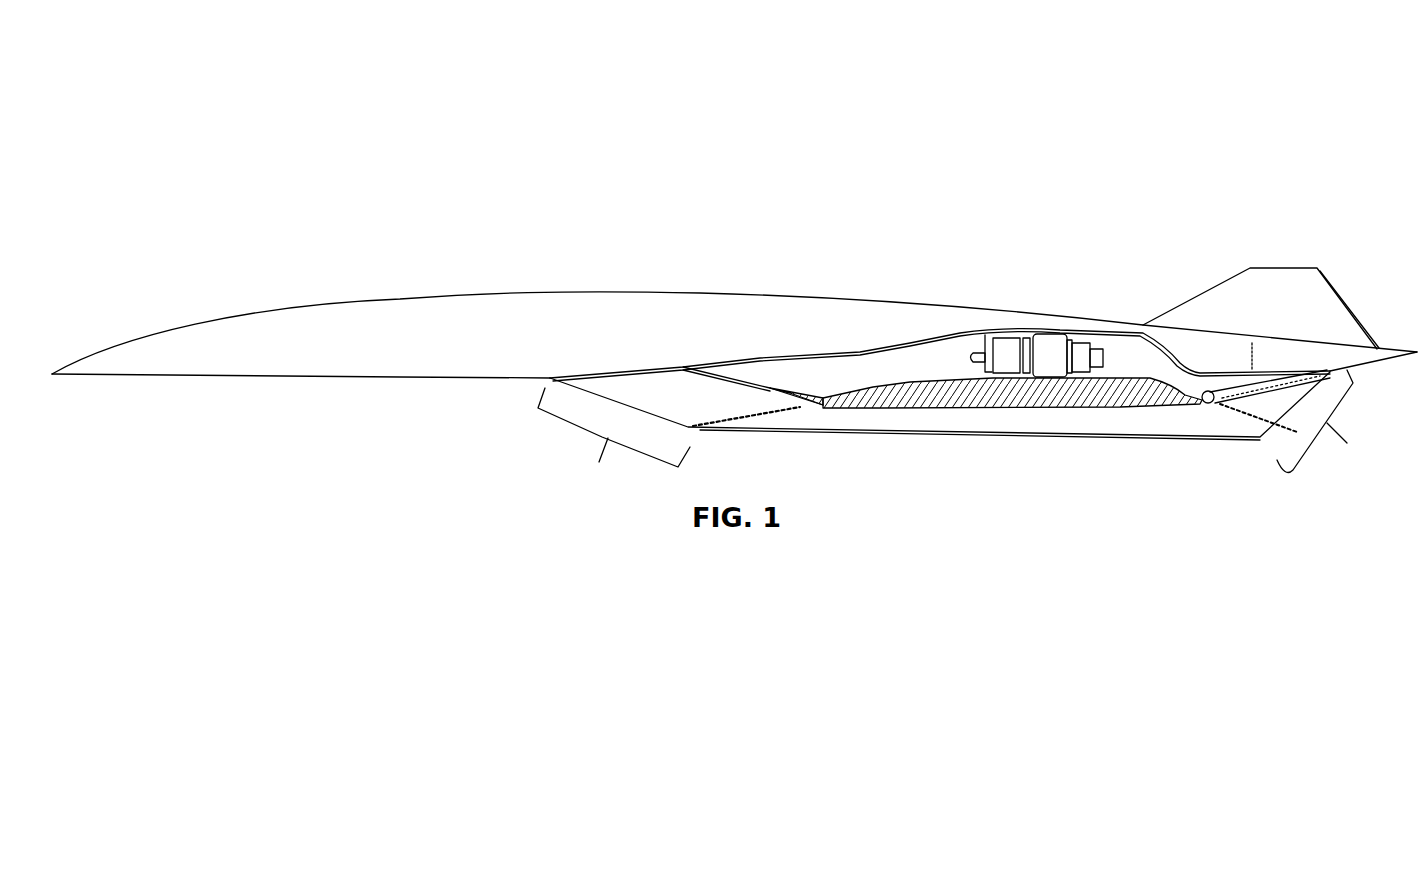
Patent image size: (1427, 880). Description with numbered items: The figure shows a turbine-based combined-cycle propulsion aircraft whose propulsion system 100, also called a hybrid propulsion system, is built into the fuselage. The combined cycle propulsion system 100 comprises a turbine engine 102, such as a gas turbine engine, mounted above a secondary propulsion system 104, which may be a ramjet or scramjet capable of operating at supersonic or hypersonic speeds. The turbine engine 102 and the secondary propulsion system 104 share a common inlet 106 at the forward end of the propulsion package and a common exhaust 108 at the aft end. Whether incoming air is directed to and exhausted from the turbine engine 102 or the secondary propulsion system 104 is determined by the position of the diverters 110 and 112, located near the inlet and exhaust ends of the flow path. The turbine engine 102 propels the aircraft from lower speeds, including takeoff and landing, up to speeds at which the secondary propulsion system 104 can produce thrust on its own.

The turbine-based combined cycle propulsion system 100 is at (226, 76).
The turbine engine 102 is at (1054, 344).
The secondary propulsion system 104 is at (996, 425).
The common inlet 106 is at (614, 451).
The common exhaust 108 is at (1312, 421).
The diverter 110 is at (766, 382).
The diverter 112 is at (1213, 407).